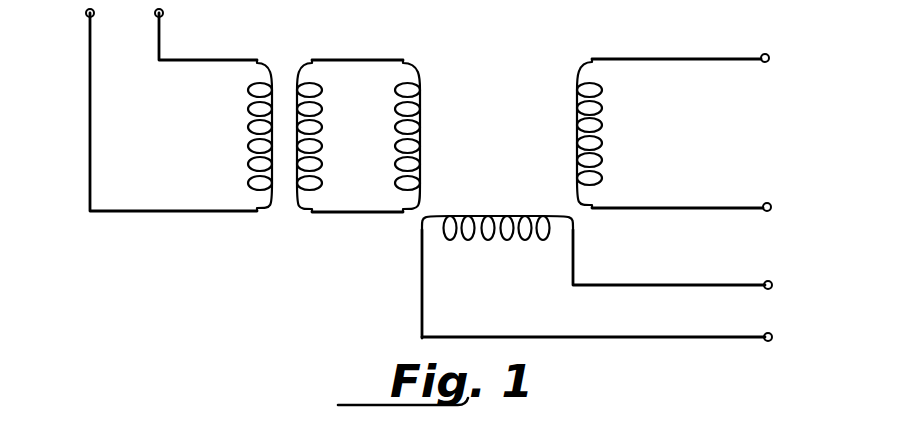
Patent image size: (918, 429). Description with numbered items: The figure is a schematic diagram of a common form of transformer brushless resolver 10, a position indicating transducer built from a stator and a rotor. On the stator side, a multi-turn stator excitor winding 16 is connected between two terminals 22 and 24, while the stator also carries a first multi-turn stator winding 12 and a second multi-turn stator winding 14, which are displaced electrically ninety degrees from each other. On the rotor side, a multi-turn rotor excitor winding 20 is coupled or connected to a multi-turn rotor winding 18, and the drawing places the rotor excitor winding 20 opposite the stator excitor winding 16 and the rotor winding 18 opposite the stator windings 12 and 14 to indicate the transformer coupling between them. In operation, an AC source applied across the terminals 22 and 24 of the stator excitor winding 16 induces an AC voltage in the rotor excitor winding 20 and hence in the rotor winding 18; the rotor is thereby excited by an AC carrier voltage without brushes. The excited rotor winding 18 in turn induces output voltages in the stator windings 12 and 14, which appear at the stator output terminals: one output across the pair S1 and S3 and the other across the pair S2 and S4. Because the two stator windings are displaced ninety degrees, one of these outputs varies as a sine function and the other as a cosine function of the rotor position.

The transformer brushless resolver 10 is at (397, 233).
The first multi-turn stator winding 12 is at (507, 240).
The second multi-turn stator winding 14 is at (600, 160).
The multi-turn stator excitor winding 16 is at (250, 128).
The multi-turn rotor winding 18 is at (415, 138).
The multi-turn rotor excitor winding 20 is at (312, 145).
The terminal 22 is at (85, 15).
The terminal 24 is at (164, 13).
The stator output terminal S1 is at (773, 283).
The stator output terminal S2 is at (772, 205).
The stator output terminal S3 is at (773, 335).
The stator output terminal S4 is at (770, 56).